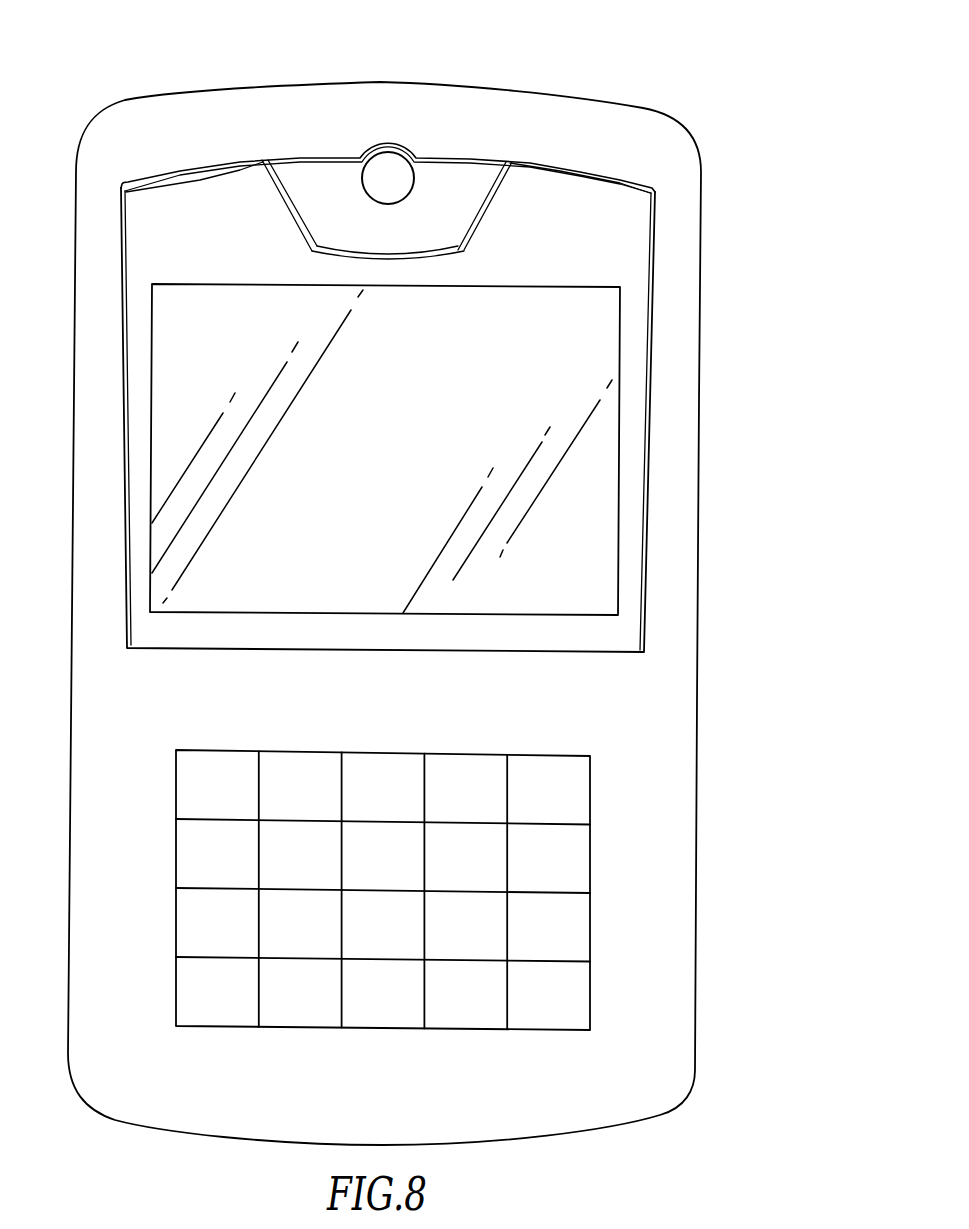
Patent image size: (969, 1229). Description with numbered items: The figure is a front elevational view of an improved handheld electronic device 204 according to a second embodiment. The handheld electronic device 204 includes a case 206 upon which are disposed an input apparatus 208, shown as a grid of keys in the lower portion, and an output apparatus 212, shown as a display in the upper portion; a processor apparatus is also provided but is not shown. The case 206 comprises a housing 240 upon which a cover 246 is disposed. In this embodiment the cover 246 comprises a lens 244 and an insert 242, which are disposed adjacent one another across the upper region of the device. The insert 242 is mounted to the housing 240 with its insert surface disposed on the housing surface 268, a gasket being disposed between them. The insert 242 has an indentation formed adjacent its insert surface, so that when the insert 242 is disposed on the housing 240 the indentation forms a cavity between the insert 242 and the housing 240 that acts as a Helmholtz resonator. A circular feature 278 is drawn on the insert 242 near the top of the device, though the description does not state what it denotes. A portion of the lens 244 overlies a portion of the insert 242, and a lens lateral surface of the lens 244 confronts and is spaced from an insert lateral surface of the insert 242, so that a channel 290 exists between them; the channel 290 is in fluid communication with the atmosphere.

The handheld electronic device 204 is at (426, 584).
The case 206 is at (712, 384).
The input apparatus 208 is at (607, 741).
The output apparatus 212 is at (593, 563).
The housing 240 is at (702, 293).
The insert 242 is at (455, 144).
The lens 244 is at (543, 163).
The cover 246 is at (519, 144).
The housing surface 268 is at (618, 228).
The speaker aperture 278 is at (433, 180).
The channel 290 is at (433, 259).